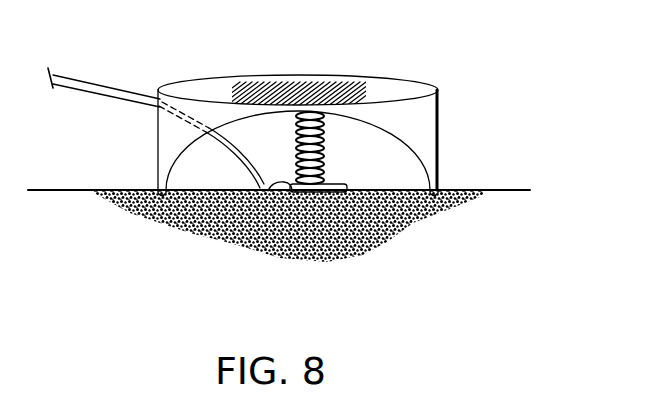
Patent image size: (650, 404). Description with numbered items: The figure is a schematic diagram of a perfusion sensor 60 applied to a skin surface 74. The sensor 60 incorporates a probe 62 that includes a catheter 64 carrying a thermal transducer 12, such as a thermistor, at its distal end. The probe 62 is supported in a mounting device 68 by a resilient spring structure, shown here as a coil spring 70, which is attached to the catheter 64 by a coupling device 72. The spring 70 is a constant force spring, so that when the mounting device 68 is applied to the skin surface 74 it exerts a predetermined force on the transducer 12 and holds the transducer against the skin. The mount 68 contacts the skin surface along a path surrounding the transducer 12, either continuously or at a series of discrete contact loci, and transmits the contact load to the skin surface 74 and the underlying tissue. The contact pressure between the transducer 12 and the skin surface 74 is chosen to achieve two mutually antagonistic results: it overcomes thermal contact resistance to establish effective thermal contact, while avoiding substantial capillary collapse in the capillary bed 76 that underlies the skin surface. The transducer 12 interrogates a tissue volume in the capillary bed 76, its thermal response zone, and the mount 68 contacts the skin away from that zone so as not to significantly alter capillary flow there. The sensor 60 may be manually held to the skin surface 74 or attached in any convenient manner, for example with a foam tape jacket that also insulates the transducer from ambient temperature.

The sensor 60 is at (454, 91).
The mounting device 68 is at (440, 146).
The catheter 64 is at (222, 127).
The coil spring 70 is at (294, 147).
The thermal transducer 12 is at (342, 190).
The probe 62 is at (232, 163).
The coupling device 72 is at (267, 192).
The skin surface 74 is at (497, 190).
The capillary bed 76 is at (353, 253).